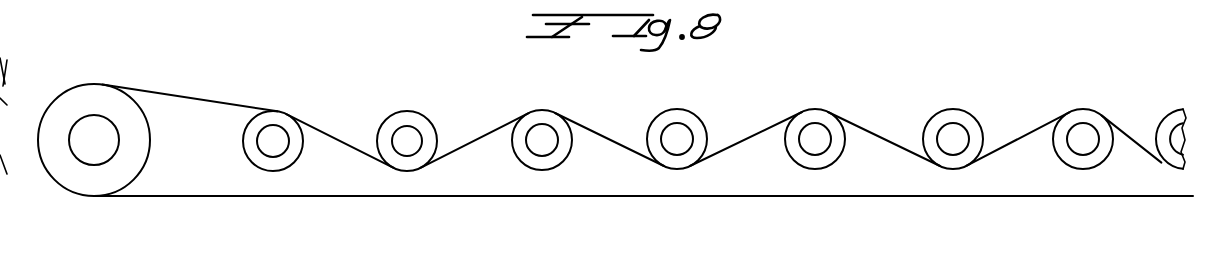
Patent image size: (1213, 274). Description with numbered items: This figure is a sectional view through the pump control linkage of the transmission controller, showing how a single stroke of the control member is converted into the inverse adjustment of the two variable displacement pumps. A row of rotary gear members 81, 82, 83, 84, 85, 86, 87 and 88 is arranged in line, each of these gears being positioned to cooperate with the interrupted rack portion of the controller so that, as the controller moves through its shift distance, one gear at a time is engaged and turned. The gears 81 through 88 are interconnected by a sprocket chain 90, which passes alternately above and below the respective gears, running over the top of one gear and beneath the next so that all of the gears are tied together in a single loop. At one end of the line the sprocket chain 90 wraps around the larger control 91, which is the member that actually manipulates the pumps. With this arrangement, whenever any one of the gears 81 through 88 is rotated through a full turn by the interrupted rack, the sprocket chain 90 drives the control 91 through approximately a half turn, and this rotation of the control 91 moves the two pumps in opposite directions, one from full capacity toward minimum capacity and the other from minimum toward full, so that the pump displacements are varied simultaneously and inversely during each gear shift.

The rotary gear member 81 is at (270, 122).
The rotary gear member 82 is at (405, 118).
The rotary gear member 83 is at (543, 118).
The rotary gear member 84 is at (675, 118).
The rotary gear member 85 is at (813, 117).
The rotary gear member 86 is at (952, 117).
The rotary gear member 87 is at (1082, 117).
The rotary gear member 88 is at (1167, 117).
The sprocket chain 90 is at (740, 196).
The control 91 is at (135, 159).